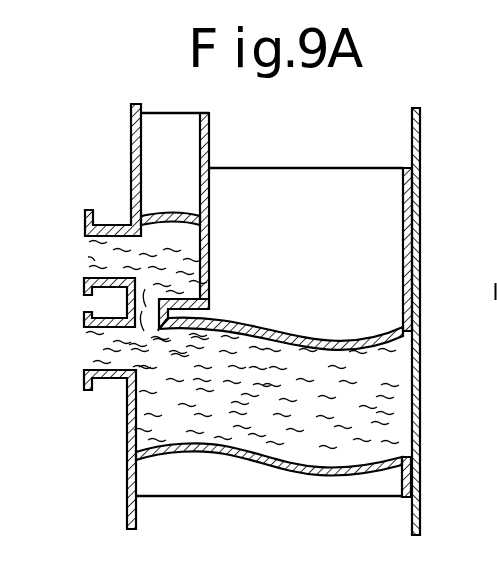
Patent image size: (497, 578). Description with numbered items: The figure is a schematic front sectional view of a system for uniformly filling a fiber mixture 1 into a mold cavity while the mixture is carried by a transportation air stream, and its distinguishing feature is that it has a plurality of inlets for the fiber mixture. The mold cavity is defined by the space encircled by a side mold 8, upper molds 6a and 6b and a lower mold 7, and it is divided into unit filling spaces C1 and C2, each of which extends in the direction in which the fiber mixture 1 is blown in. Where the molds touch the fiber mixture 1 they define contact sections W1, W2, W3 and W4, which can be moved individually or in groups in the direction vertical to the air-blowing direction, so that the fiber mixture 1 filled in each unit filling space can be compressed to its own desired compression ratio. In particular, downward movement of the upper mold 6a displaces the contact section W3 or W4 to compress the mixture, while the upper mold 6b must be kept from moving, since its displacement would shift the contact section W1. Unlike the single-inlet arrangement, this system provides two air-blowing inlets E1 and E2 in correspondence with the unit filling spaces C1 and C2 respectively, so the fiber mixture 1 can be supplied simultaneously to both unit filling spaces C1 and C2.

The fiber mixture 1 is at (411, 321).
The upper mold 6a is at (373, 232).
The upper mold 6b is at (217, 204).
The lower mold 7 is at (380, 487).
The side mold 8 is at (419, 395).
The contact section W1 is at (177, 213).
The contact section W2 is at (192, 290).
The contact section W3 is at (342, 340).
The contact section W4 is at (350, 455).
The unit filling space C1 is at (150, 422).
The unit filling space C2 is at (153, 243).
The air-blowing inlet E1 is at (93, 265).
The air-blowing inlet E2 is at (90, 345).